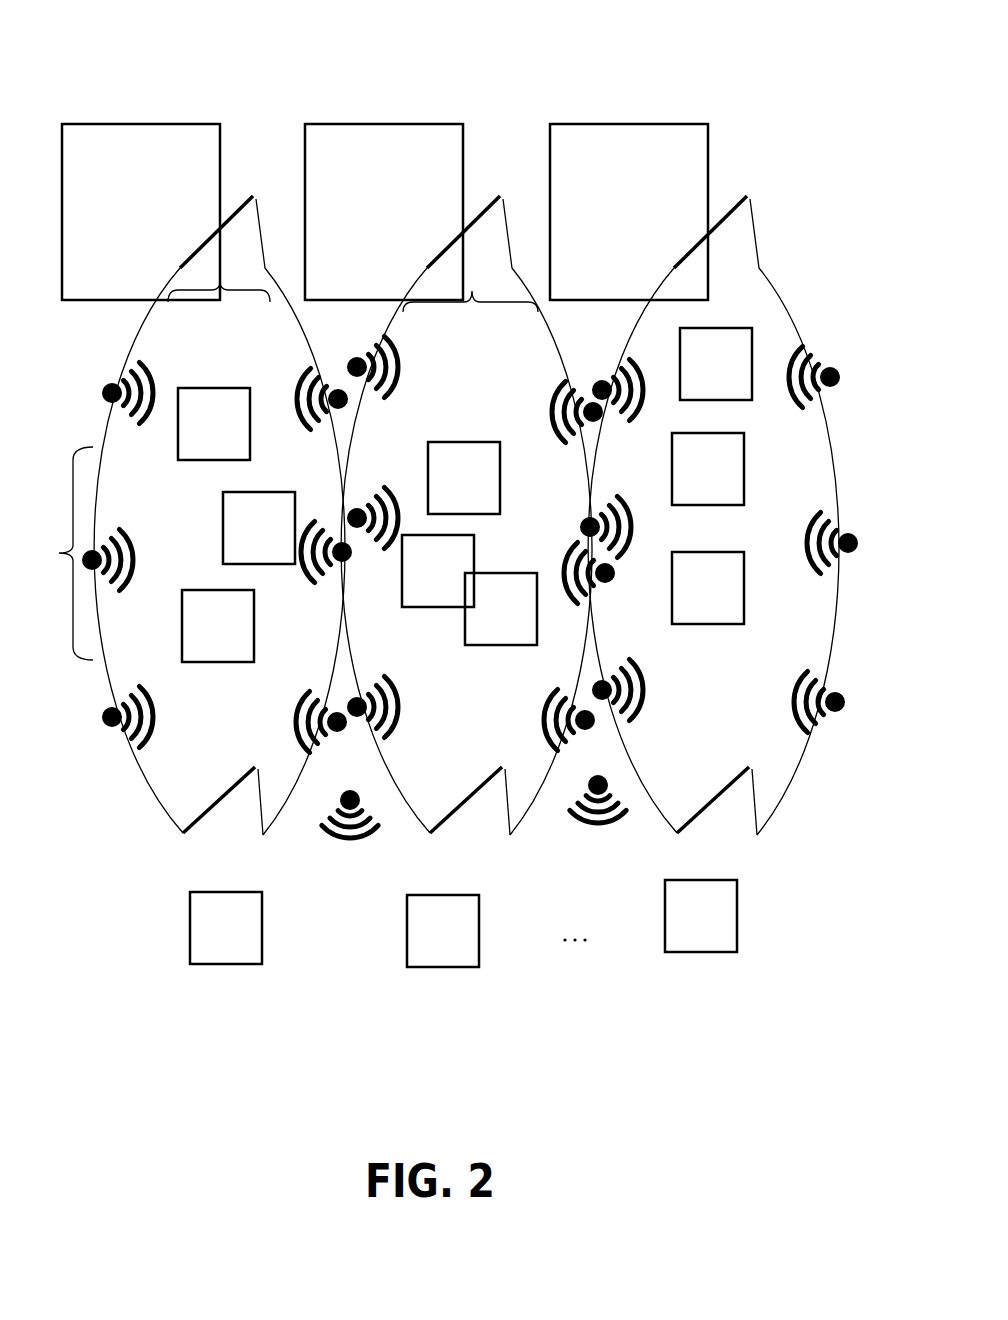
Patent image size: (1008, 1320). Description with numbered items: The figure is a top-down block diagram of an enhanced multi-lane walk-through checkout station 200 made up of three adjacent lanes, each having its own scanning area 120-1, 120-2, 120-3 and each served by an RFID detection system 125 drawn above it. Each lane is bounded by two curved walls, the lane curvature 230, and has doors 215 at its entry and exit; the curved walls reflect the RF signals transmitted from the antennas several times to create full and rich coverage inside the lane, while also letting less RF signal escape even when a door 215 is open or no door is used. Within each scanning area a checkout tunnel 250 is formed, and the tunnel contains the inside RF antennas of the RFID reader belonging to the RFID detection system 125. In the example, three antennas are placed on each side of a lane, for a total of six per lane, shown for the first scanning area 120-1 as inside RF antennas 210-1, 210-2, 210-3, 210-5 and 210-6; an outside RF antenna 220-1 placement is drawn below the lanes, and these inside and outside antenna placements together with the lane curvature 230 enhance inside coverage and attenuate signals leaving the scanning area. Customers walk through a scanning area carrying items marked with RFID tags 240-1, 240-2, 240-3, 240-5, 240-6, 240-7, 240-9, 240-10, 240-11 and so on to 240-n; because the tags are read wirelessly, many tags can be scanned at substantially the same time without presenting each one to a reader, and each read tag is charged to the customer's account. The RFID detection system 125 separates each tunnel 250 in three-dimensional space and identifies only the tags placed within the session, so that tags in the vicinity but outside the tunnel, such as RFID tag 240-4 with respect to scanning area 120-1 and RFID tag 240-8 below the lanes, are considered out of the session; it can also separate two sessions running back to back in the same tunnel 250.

The enhanced multi-lane walk-through checkout station 200 is at (228, 40).
The RFID detection system 125 is at (118, 277).
The scanning area 120-1 is at (137, 334).
The scanning area 120-2 is at (553, 765).
The scanning area 120-3 is at (840, 588).
The door 215 is at (239, 200).
The checkout tunnel 250 is at (740, 734).
The lane curvature 230 is at (50, 553).
The inside RF antenna 210-1 is at (156, 358).
The inside RF antenna 210-2 is at (290, 435).
The inside RF antenna 210-3 is at (137, 566).
The inside RF antenna 210-5 is at (165, 698).
The inside RF antenna 210-6 is at (290, 733).
The outside RF antenna 220-1 is at (333, 858).
The RFID tag 240-1 is at (187, 425).
The RFID tag 240-2 is at (232, 529).
The RFID tag 240-3 is at (191, 627).
The RFID tag 240-4 is at (199, 929).
The RFID tag 240-5 is at (437, 479).
The RFID tag 240-6 is at (411, 572).
The RFID tag 240-7 is at (474, 610).
The RFID tag 240-8 is at (416, 932).
The RFID tag 240-9 is at (681, 470).
The RFID tag 240-10 is at (681, 589).
The RFID tag 240-11 is at (689, 365).
The RFID tag 240-n is at (674, 917).